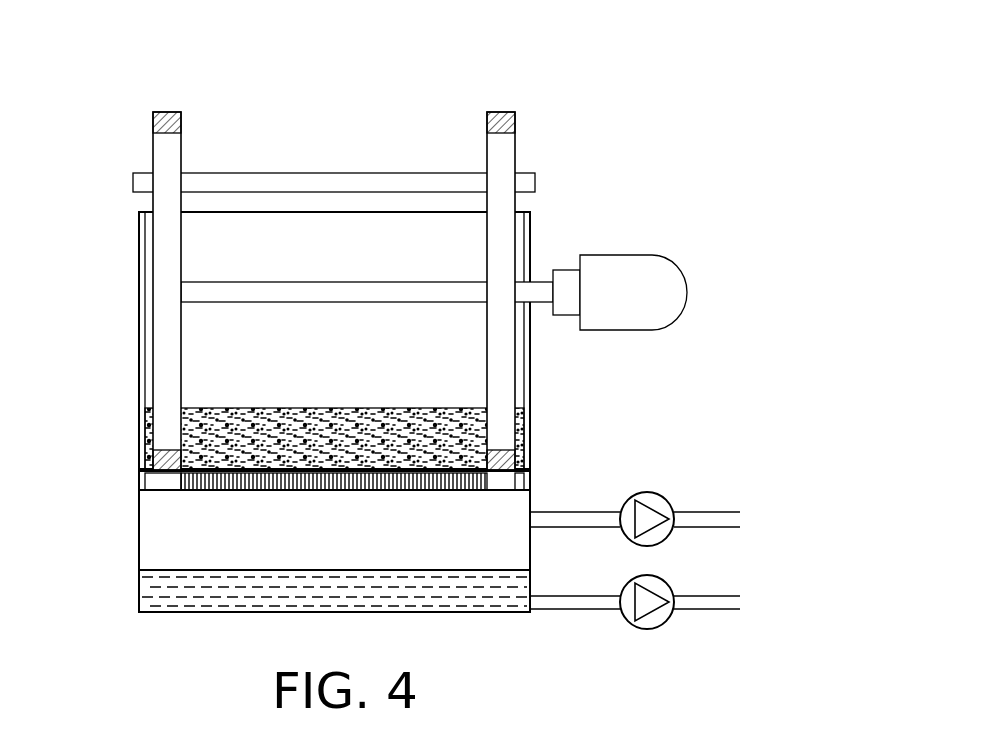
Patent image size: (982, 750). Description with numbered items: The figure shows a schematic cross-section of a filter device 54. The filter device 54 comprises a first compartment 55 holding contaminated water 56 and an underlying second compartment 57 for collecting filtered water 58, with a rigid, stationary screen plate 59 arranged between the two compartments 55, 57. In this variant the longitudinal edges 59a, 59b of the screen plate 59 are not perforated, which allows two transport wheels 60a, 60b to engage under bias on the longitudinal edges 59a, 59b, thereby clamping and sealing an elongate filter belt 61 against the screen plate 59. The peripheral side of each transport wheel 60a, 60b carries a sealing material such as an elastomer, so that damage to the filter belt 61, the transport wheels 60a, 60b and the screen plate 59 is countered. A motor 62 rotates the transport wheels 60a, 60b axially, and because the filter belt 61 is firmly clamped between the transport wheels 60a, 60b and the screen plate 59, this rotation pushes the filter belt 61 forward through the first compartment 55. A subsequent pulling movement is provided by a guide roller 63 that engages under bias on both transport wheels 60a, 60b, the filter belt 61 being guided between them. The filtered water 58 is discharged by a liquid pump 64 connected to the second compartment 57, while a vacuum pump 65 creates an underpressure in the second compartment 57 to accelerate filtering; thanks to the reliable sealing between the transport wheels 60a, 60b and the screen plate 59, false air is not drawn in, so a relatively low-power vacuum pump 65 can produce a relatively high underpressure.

The filter device 54 is at (86, 62).
The first compartment 55 is at (347, 364).
The contaminated water 56 is at (418, 420).
The second compartment 57 is at (347, 540).
The filtered water 58 is at (418, 590).
The screen plate 59 is at (280, 495).
The longitudinal edge 59a is at (148, 483).
The longitudinal edge 59b is at (515, 483).
The transport wheel 60a is at (165, 153).
The transport wheel 60b is at (497, 153).
The filter belt 61 is at (140, 470).
The motor 62 is at (628, 255).
The guide roller 63 is at (330, 182).
The liquid pump 64 is at (650, 630).
The vacuum pump 65 is at (648, 492).